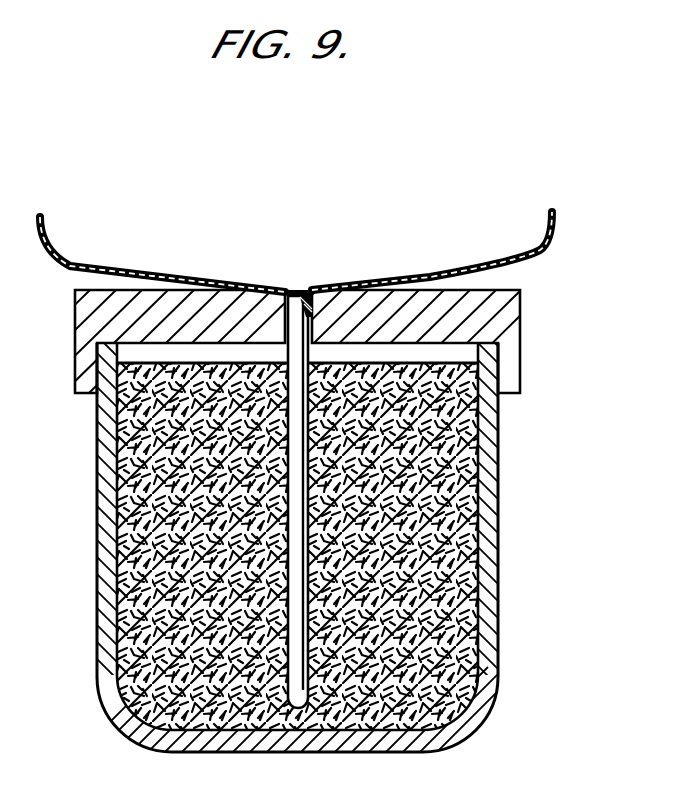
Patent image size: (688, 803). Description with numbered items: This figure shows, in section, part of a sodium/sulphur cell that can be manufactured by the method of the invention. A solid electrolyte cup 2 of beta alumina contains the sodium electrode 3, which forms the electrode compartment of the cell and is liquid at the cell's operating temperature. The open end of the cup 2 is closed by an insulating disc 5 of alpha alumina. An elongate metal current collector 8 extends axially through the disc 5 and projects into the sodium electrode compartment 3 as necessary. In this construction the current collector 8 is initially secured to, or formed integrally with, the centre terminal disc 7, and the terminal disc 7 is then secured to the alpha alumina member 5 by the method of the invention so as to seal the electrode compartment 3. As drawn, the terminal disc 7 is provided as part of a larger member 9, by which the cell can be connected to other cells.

The solid electrolyte cup 2 is at (498, 545).
The sodium electrode 3 is at (405, 477).
The insulating disc 5 is at (521, 370).
The centre terminal disc 7 is at (258, 288).
The current collector 8 is at (296, 653).
The larger member 9 is at (556, 232).